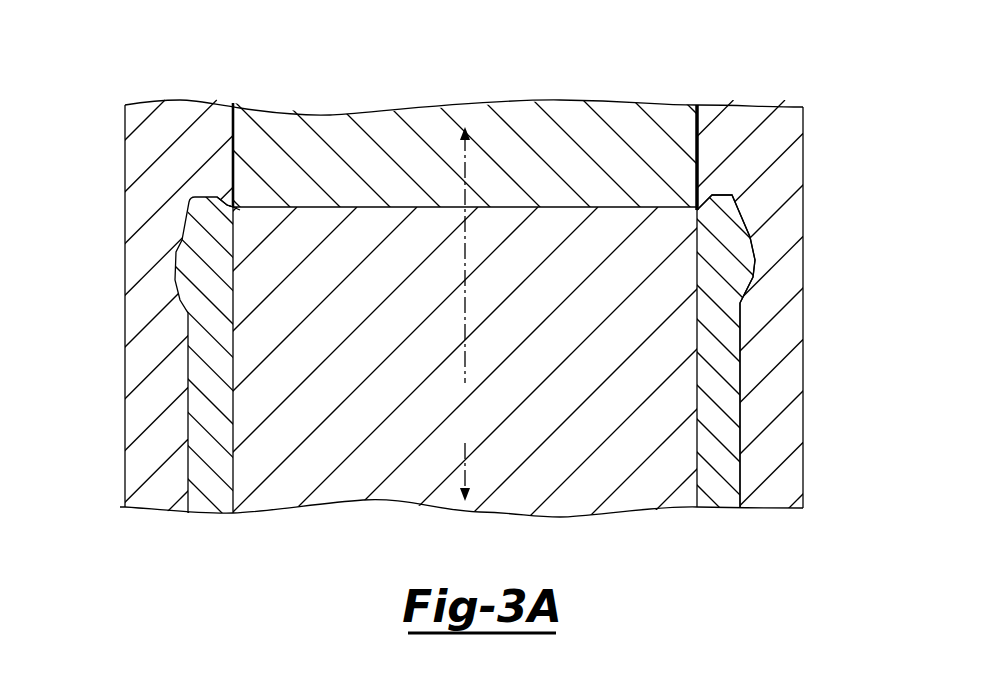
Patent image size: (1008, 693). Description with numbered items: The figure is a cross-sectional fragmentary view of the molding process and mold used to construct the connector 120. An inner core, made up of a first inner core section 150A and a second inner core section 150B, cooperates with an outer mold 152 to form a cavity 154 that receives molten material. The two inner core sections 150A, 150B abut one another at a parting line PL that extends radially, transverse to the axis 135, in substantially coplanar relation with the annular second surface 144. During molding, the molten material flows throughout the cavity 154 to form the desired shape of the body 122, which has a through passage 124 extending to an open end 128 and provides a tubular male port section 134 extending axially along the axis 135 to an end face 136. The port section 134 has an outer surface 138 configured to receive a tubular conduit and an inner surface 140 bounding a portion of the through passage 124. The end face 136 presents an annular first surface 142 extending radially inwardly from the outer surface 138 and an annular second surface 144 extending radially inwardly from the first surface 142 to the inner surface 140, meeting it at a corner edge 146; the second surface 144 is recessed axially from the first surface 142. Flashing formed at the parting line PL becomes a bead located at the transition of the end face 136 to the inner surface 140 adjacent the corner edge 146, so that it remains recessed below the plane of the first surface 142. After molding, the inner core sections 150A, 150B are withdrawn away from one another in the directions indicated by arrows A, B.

The connector 120 is at (772, 199).
The body 122 is at (725, 401).
The through passage 124 is at (617, 276).
The open end 128 is at (721, 197).
The tubular male port section 134 is at (157, 422).
The axis 135 is at (463, 378).
The end face 136 is at (699, 181).
The outer surface 138 is at (750, 465).
The inner surface 140 is at (688, 458).
The annular first surface 142 is at (206, 182).
The annular second surface 144 is at (229, 195).
The corner edge 146 is at (240, 212).
The first inner core section 150A is at (395, 133).
The second inner core section 150B is at (320, 487).
The outer mold 152 is at (143, 272).
The cavity 154 is at (228, 372).
The direction of withdrawal of first inner core section A is at (465, 165).
The direction of withdrawal of second inner core section B is at (465, 465).
The parting line PL is at (558, 206).